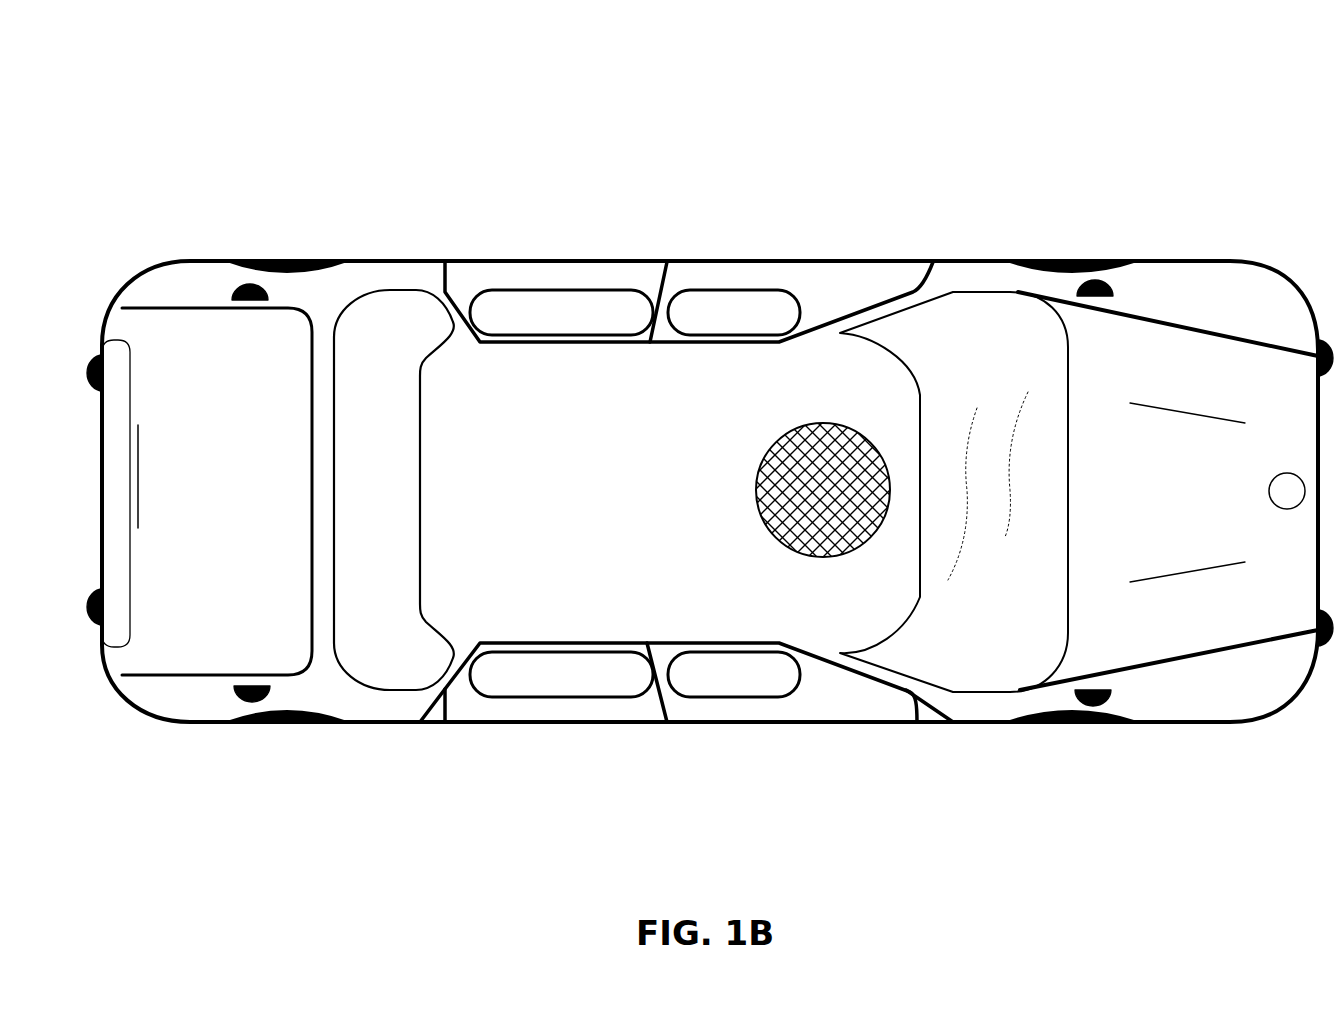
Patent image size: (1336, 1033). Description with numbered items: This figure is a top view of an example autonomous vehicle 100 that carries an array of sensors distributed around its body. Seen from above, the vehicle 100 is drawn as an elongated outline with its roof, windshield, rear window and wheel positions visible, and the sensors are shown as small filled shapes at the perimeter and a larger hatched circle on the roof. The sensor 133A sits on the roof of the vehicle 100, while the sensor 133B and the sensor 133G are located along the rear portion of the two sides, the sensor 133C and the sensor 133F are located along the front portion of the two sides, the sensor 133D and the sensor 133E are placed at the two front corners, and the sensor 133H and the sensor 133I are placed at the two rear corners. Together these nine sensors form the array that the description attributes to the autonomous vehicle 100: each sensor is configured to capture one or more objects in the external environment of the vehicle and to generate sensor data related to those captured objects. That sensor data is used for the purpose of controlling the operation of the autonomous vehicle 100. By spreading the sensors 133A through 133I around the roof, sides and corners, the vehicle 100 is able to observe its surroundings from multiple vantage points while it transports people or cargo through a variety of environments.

The autonomous vehicle 100 is at (1188, 105).
The sensor 133A is at (774, 438).
The sensor 133B is at (270, 689).
The sensor 133C is at (1111, 692).
The sensor 133D is at (1315, 626).
The sensor 133E is at (1314, 358).
The sensor 133F is at (1113, 294).
The sensor 133G is at (268, 298).
The sensor 133H is at (104, 377).
The sensor 133I is at (104, 607).